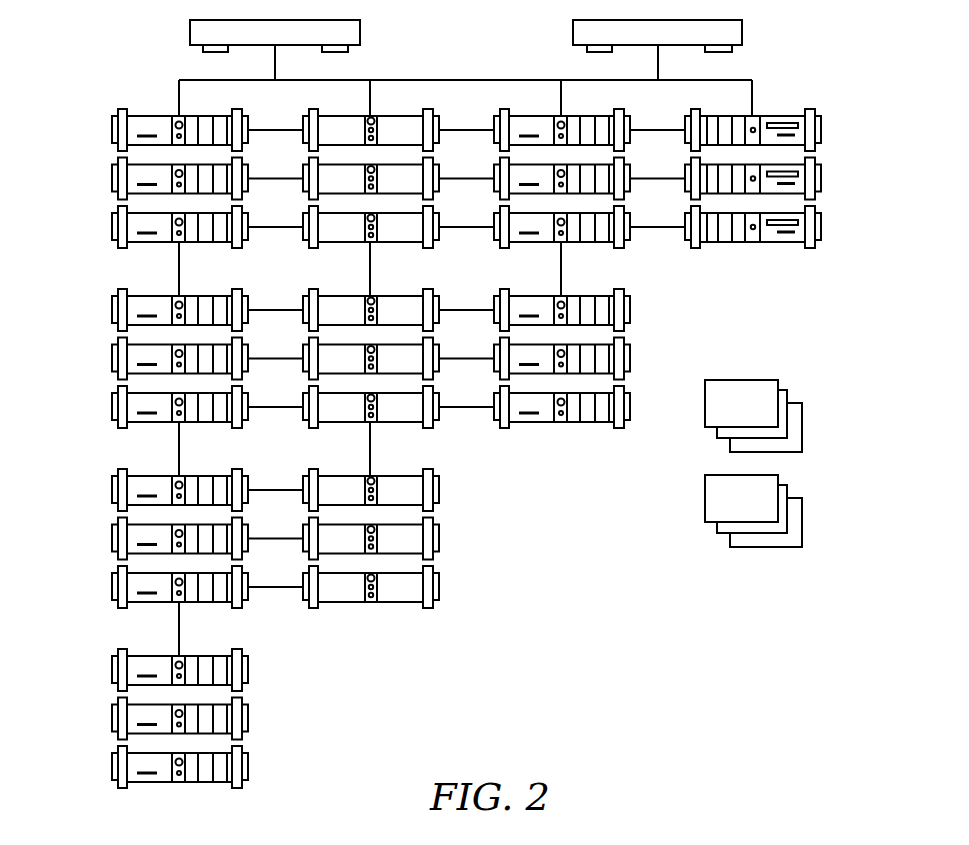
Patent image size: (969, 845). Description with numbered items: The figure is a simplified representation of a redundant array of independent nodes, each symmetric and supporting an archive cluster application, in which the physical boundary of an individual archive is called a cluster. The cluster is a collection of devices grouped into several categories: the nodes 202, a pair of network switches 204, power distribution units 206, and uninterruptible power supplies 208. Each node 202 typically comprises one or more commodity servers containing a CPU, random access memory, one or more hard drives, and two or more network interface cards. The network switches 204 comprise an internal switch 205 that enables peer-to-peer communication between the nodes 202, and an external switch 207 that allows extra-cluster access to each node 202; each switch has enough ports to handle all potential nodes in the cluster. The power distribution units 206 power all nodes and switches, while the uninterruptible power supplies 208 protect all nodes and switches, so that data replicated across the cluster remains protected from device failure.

The nodes 202 is at (78, 107).
The pair of network switches 204 is at (803, 77).
The internal switch 205 is at (190, 32).
The power distribution units 206 is at (738, 378).
The external switch 207 is at (743, 32).
The uninterruptible power supplies 208 is at (763, 548).